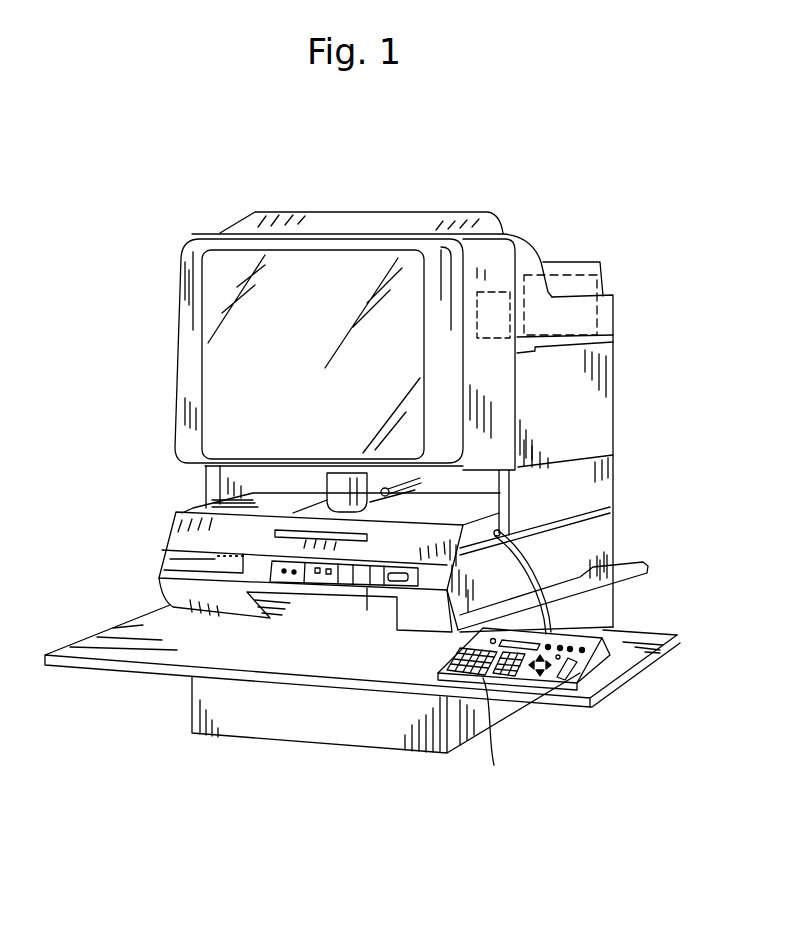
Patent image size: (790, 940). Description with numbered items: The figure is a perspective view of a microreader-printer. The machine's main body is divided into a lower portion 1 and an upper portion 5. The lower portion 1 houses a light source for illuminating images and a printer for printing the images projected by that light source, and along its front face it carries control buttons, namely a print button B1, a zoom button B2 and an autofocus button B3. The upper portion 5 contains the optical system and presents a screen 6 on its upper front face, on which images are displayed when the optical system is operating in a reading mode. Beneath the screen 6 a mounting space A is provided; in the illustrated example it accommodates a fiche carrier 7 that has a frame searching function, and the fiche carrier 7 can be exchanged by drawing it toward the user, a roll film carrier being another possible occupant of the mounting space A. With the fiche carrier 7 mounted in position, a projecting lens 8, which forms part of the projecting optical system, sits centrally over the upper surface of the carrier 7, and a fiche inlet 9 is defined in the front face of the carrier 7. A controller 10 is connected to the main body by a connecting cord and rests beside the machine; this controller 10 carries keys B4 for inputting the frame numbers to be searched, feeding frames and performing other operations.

The lower portion of main body 1 is at (167, 592).
The upper portion of main body 5 is at (615, 367).
The screen 6 is at (354, 270).
The fiche carrier 7 is at (177, 533).
The projecting lens 8 is at (323, 475).
The fiche inlet 9 is at (285, 532).
The controller 10 is at (613, 626).
The mounting space A is at (197, 490).
The print button B1 is at (388, 598).
The zoom button B2 is at (362, 588).
The autofocus button B3 is at (350, 586).
The keys B4 is at (494, 765).